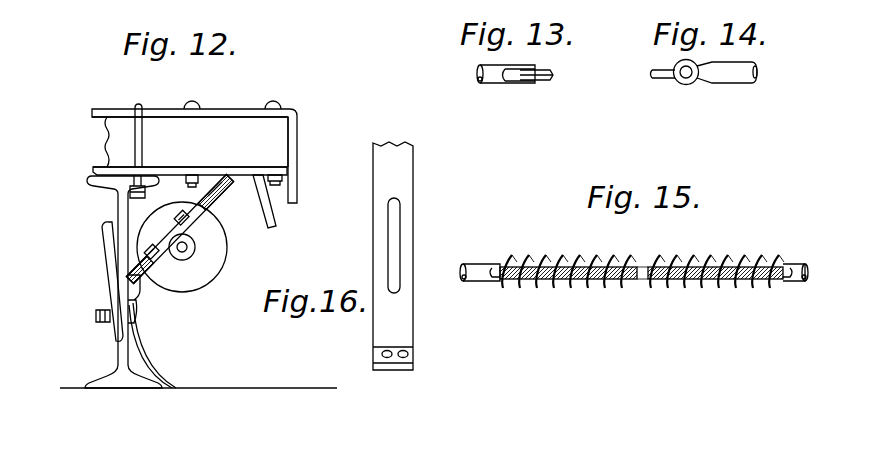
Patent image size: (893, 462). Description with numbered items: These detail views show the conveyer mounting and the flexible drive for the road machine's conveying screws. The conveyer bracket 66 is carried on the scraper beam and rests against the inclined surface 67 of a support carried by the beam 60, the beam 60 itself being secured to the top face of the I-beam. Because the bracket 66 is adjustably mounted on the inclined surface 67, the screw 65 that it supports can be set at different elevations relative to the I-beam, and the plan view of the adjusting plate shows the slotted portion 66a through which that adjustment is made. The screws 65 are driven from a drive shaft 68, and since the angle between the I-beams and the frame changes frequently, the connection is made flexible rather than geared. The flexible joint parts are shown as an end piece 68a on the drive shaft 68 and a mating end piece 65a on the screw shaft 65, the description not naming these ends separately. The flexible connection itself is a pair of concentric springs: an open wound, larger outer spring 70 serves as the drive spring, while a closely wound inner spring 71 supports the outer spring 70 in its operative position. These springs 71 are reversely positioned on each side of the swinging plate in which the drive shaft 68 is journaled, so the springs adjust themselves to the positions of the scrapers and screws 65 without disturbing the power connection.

In FIG. 12, the beam 60 is at (268, 130).
In FIG. 14, the screw 65 is at (737, 80).
In FIG. 15, the screw 65 is at (793, 260).
In FIG. 14, the ring end of rod 65a is at (670, 84).
In FIG. 12, the bracket 66 is at (182, 272).
In FIG. 12, the slot / rod 66a is at (203, 223).
In FIG. 16, the slot / rod 66a is at (395, 243).
In FIG. 12, the inclined surface 67 is at (193, 202).
In FIG. 16, the inclined surface 67 is at (395, 331).
In FIG. 13, the drive shaft 68 is at (500, 84).
In FIG. 15, the drive shaft 68 is at (484, 264).
In FIG. 13, the tongue of tube 68a is at (556, 74).
In FIG. 15, the open wound outer spring 70 is at (680, 255).
In FIG. 15, the inner spring 71 is at (658, 280).